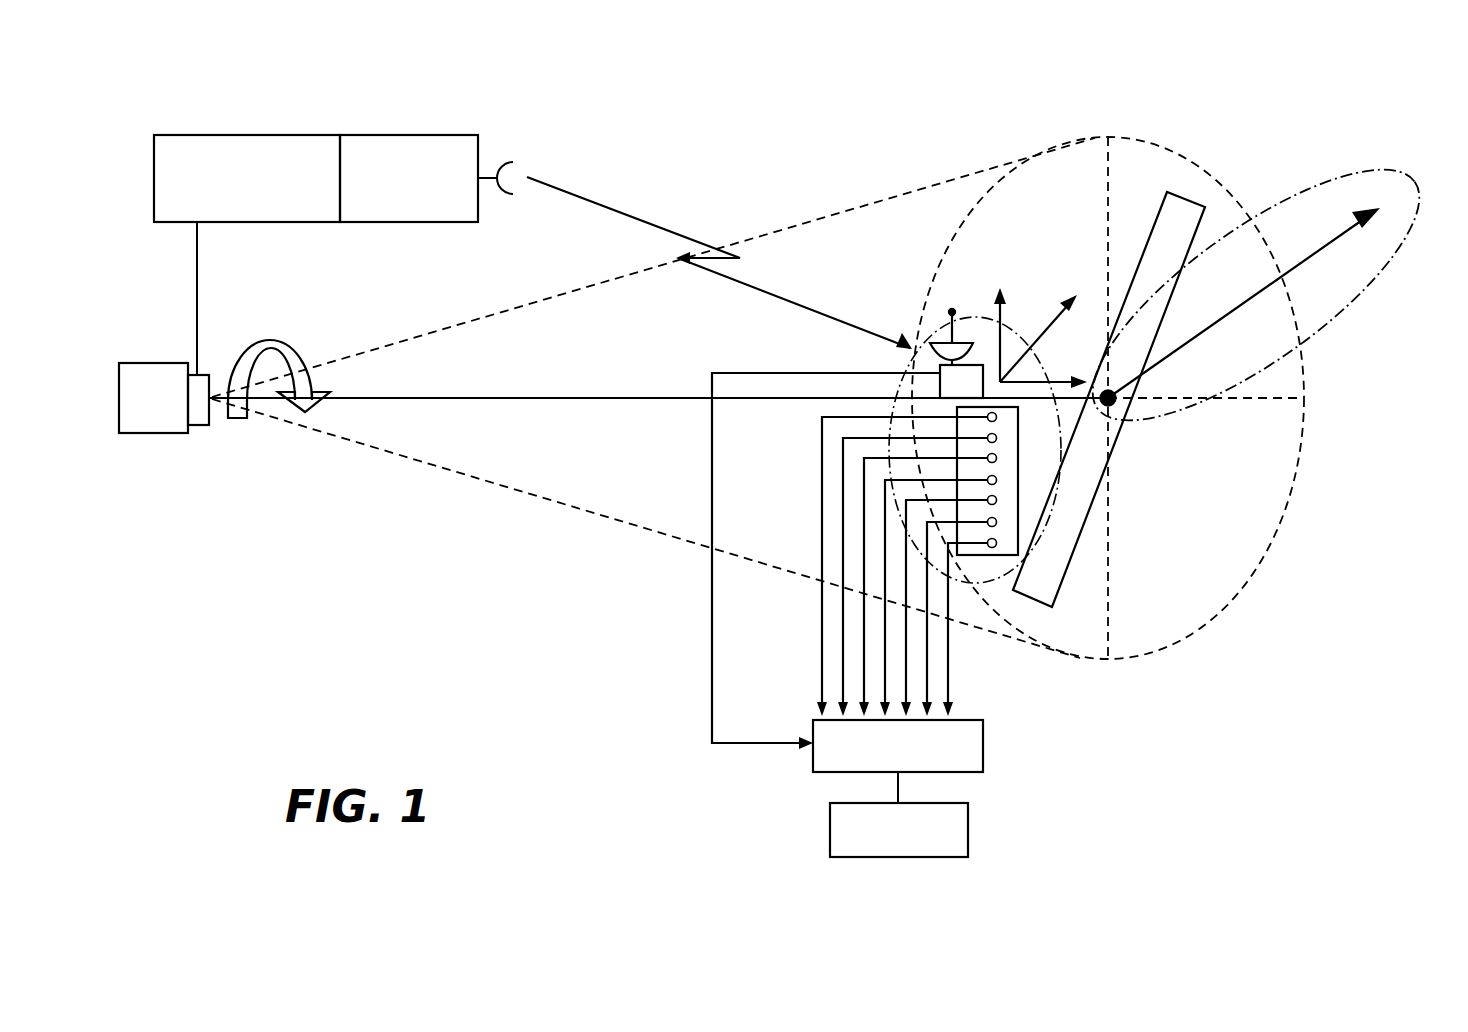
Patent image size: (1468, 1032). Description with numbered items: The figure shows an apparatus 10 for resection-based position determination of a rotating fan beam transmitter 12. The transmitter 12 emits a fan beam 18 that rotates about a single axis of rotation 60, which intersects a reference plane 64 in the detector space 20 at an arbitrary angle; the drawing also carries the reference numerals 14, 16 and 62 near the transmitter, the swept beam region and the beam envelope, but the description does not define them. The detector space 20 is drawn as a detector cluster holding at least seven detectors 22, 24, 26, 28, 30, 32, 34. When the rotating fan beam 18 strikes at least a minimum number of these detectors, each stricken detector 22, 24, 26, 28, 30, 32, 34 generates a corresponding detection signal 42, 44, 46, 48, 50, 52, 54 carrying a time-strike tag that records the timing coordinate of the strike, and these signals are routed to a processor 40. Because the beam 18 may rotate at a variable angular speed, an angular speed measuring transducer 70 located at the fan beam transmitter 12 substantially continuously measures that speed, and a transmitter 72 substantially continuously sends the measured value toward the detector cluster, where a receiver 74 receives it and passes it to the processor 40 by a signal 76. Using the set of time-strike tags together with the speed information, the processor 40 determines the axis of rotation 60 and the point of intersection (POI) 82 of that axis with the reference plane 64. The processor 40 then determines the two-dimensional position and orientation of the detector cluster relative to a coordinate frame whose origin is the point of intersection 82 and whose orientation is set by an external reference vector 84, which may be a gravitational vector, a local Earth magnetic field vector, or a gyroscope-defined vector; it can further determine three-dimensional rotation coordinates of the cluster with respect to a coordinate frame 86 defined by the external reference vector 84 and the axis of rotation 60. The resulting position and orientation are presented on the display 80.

The apparatus for resection-based position determination 10 is at (352, 578).
The rotating fan beam transmitter 12 is at (178, 362).
The direction of rotation 14 is at (377, 347).
The plane of rotation circle 16 is at (1073, 137).
The rotating fan beam 18 is at (1188, 195).
The detector space 20 is at (932, 336).
The detector 22 is at (987, 417).
The detector 24 is at (987, 438).
The detector 26 is at (987, 458).
The detector 28 is at (987, 480).
The detector 30 is at (987, 500).
The detector 32 is at (987, 522).
The detector 34 is at (987, 543).
The processor 40 is at (983, 752).
The detection signal 42 is at (822, 600).
The detection signal 44 is at (843, 633).
The detection signal 46 is at (864, 665).
The detection signal 48 is at (885, 690).
The detection signal 50 is at (906, 657).
The detection signal 52 is at (927, 680).
The detection signal 54 is at (948, 697).
The axis of rotation 60 is at (503, 399).
The transmitted signal cone 62 is at (785, 228).
The reference plane 64 is at (1004, 350).
The angular speed measuring transducer 70 is at (292, 223).
The transmitter 72 is at (415, 223).
The receiver 74 is at (942, 322).
The signal 76 is at (712, 690).
The display 80 is at (968, 836).
The point of intersection (POI) 82 is at (1116, 408).
The external reference vector 84 is at (1338, 232).
The coordinate frame 86 is at (1328, 330).